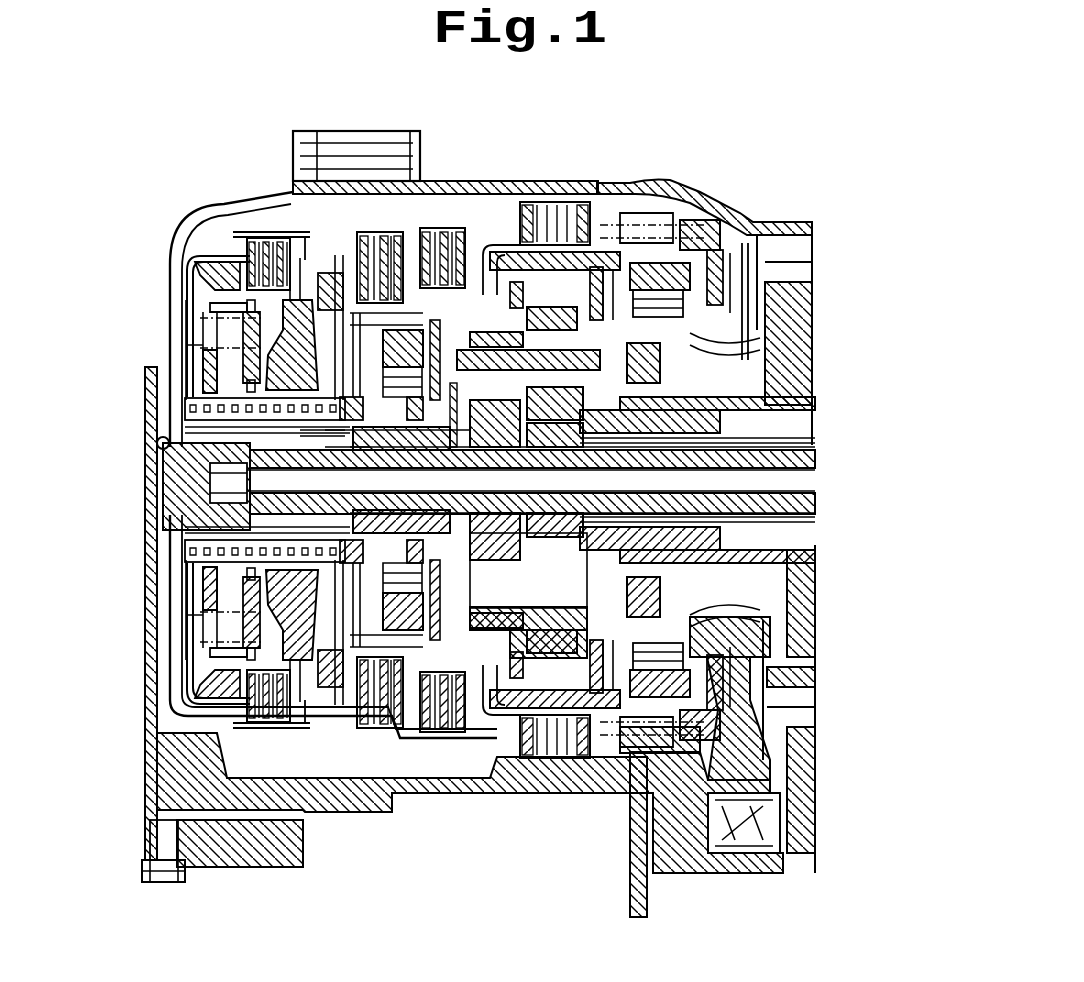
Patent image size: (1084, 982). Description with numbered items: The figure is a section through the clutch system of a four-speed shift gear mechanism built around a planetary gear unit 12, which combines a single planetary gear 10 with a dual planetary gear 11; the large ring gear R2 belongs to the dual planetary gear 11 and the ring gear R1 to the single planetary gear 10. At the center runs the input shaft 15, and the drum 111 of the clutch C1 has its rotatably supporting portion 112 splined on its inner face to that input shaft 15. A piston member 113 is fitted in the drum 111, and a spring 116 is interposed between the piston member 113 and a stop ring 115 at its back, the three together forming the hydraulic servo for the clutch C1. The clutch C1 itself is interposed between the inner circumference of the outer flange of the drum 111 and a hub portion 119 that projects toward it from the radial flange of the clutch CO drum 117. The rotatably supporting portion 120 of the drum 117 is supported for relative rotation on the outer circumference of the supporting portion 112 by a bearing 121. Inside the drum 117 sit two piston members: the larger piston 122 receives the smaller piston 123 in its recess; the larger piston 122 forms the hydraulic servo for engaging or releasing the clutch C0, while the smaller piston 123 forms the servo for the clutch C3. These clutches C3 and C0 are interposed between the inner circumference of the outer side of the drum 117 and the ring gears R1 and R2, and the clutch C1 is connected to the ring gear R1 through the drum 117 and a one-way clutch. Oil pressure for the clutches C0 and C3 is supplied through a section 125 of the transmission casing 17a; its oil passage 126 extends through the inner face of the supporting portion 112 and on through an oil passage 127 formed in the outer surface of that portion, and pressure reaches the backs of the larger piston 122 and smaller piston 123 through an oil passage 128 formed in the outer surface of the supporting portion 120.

The single planetary gear 10 is at (531, 482).
The dual planetary gear 11 is at (583, 290).
The planetary gear unit 12 is at (546, 593).
The input shaft 15 is at (544, 484).
The transmission casing 17a is at (170, 340).
The drum of the clutch C1 111 is at (265, 232).
The rotatably supporting portion 112 is at (349, 463).
The piston member 113 is at (190, 268).
The stop ring 115 is at (212, 318).
The spring 116 is at (210, 314).
The clutch CO drum 117 is at (432, 245).
The hub portion 119 is at (258, 262).
The rotatably supporting portion of the clutch CO drum 120 is at (444, 463).
The bearing 121 is at (393, 463).
The larger piston 122 is at (327, 277).
The smaller piston 123 is at (356, 232).
The section of the transmission casing 125 is at (150, 494).
The oil passage 126 is at (155, 452).
The oil passage 127 is at (313, 392).
The oil passage 128 is at (190, 408).
The clutch C1 is at (280, 238).
The clutch C3 is at (408, 250).
The clutch CO C0 is at (474, 228).
The ring gear of the single planetary gear R1 is at (507, 296).
The large ring gear R2 is at (513, 250).